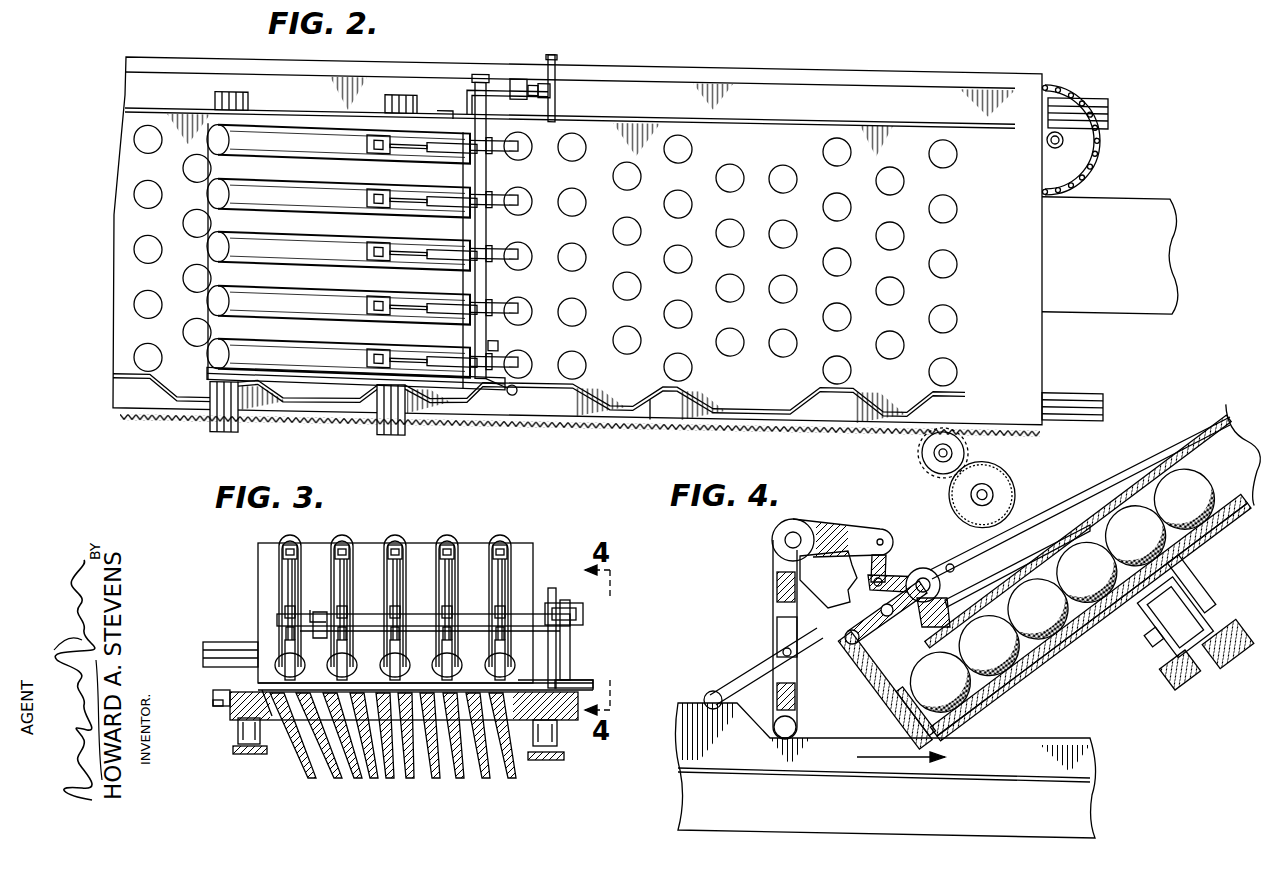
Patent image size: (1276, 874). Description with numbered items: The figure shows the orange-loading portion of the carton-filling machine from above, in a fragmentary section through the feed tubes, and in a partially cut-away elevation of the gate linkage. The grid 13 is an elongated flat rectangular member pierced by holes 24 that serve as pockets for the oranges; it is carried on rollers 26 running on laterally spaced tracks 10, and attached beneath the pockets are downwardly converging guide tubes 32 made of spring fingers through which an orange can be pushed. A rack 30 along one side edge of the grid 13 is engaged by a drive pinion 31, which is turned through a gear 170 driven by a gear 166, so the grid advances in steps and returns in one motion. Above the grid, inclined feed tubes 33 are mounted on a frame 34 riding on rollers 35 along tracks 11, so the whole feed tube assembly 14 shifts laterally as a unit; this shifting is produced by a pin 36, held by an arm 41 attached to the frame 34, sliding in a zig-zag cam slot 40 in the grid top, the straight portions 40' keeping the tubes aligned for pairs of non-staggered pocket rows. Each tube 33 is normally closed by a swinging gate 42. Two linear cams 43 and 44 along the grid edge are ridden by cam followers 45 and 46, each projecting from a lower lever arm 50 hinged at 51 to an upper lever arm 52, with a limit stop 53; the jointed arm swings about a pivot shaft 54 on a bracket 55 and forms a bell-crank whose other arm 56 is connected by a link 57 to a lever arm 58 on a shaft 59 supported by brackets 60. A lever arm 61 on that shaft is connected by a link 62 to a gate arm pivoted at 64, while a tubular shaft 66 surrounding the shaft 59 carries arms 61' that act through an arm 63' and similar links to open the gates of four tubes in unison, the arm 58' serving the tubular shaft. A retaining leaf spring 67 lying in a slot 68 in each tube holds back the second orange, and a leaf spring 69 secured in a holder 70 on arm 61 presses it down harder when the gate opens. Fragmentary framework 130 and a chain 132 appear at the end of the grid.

In FIG. 2, the tracks 10 is at (1095, 83).
In FIG. 3, the tracks 10 is at (248, 754).
In FIG. 2, the tracks 11 is at (215, 428).
In FIG. 3, the tracks 11 is at (220, 644).
In FIG. 4, the tracks 11 is at (1190, 680).
In FIG. 2, the grid 13 is at (1021, 325).
In FIG. 4, the grid 13 is at (697, 788).
In FIG. 2, the feed tubes 14 is at (370, 94).
In FIG. 2, the holes 24 is at (895, 282).
In FIG. 3, the holes 24 is at (497, 718).
In FIG. 3, the rollers 26 is at (240, 735).
In FIG. 2, the rack 30 is at (656, 421).
In FIG. 3, the rack 30 is at (233, 708).
In FIG. 2, the drive pinion 31 is at (922, 443).
In FIG. 3, the guide tubes 32 is at (365, 783).
In FIG. 2, the feed tubes 33 is at (298, 187).
In FIG. 3, the feed tubes 33 is at (392, 540).
In FIG. 4, the feed tubes 33 is at (1000, 693).
In FIG. 2, the frame 34 is at (318, 227).
In FIG. 3, the frame 34 is at (420, 556).
In FIG. 4, the frame 34 is at (1083, 635).
In FIG. 4, the rollers 35 is at (1180, 627).
In FIG. 2, the pin 36 is at (513, 389).
In FIG. 3, the pin 36 is at (225, 700).
In FIG. 2, the cam slot 40 is at (636, 433).
In FIG. 3, the cam slot 40 is at (280, 724).
In FIG. 2, the slot portion parallel to line of travel 40' is at (539, 421).
In FIG. 2, the arm 41 is at (486, 379).
In FIG. 3, the arm 41 is at (262, 678).
In FIG. 3, the gate 42 is at (350, 670).
In FIG. 4, the gate 42 is at (920, 710).
In FIG. 2, the linear cam 43 is at (720, 71).
In FIG. 4, the linear cam 43 is at (822, 757).
In FIG. 2, the linear cam 44 is at (731, 110).
In FIG. 2, the cam follower 45 is at (559, 54).
In FIG. 3, the cam follower 45 is at (575, 683).
In FIG. 4, the cam follower 45 is at (795, 727).
In FIG. 2, the cam follower 46 is at (557, 100).
In FIG. 3, the lever arm 50 is at (558, 666).
In FIG. 4, the lever arm 50 is at (762, 656).
In FIG. 4, the hinge 51 is at (783, 652).
In FIG. 3, the upper lever arm 52 is at (570, 636).
In FIG. 4, the upper lever arm 52 is at (785, 583).
In FIG. 4, the limit stop 53 is at (790, 628).
In FIG. 4, the pivot shaft 54 is at (771, 540).
In FIG. 2, the bracket 55 is at (464, 93).
In FIG. 4, the bracket 55 is at (813, 565).
In FIG. 2, the bell-crank arm 56 is at (545, 77).
In FIG. 4, the bell-crank arm 56 is at (858, 535).
In FIG. 2, the link 57 is at (520, 78).
In FIG. 4, the link 57 is at (884, 552).
In FIG. 2, the lever arm 58 is at (497, 58).
In FIG. 3, the lever arm 58 is at (599, 612).
In FIG. 4, the link 58' is at (903, 561).
In FIG. 2, the shaft 59 is at (498, 339).
In FIG. 3, the shaft 59 is at (313, 612).
In FIG. 4, the shaft 59 is at (930, 570).
In FIG. 4, the brackets 60 is at (957, 606).
In FIG. 3, the lever arm 61 is at (310, 638).
In FIG. 4, the lever arm 61 is at (871, 598).
In FIG. 2, the arm 61' is at (507, 253).
In FIG. 3, the arm 61' is at (473, 630).
In FIG. 4, the link 62 is at (870, 616).
In FIG. 4, the arm 63' is at (886, 704).
In FIG. 4, the pivot 64 is at (870, 665).
In FIG. 2, the tubular shaft 66 is at (491, 278).
In FIG. 3, the tubular shaft 66 is at (365, 614).
In FIG. 2, the retaining leaf spring 67 is at (403, 146).
In FIG. 3, the retaining leaf spring 67 is at (287, 565).
In FIG. 4, the retaining leaf spring 67 is at (1107, 507).
In FIG. 4, the slot 68 is at (977, 598).
In FIG. 2, the leaf spring 69 is at (453, 143).
In FIG. 3, the leaf spring 69 is at (287, 592).
In FIG. 4, the leaf spring 69 is at (1003, 550).
In FIG. 4, the holder 70 is at (951, 565).
In FIG. 2, the frame plate 130 is at (1135, 190).
In FIG. 2, the chain 132 is at (1080, 124).
In FIG. 2, the gear 166 is at (993, 464).
In FIG. 2, the gear 170 is at (968, 435).